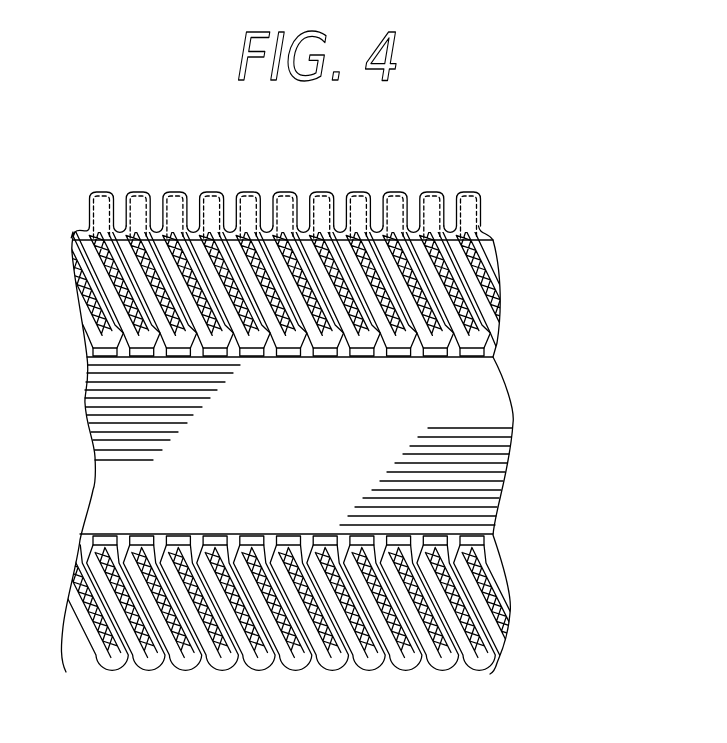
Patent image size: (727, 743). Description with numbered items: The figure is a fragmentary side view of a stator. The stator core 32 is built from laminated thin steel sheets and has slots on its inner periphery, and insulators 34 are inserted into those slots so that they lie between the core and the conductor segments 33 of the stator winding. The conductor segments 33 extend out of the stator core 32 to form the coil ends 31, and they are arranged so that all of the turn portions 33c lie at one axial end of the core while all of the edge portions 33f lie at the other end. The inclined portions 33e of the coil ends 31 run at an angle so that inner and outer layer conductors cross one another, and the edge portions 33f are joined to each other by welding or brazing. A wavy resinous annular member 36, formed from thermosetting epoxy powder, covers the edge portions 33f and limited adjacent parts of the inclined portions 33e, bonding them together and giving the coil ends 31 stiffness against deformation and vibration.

The coil ends 31 is at (494, 198).
The stator core 32 is at (490, 388).
The conductor segments 33 is at (343, 452).
The turn portions 33c is at (482, 668).
The inclined portions 33e is at (486, 265).
The edge portions 33f is at (432, 191).
The insulators 34 is at (475, 347).
The annular member 36 is at (177, 192).